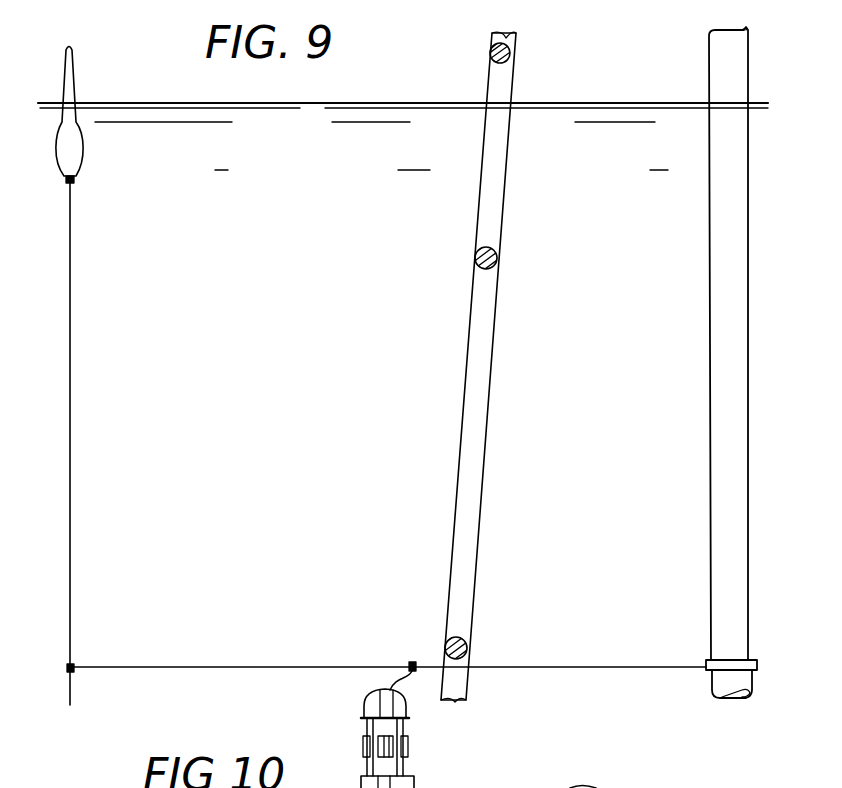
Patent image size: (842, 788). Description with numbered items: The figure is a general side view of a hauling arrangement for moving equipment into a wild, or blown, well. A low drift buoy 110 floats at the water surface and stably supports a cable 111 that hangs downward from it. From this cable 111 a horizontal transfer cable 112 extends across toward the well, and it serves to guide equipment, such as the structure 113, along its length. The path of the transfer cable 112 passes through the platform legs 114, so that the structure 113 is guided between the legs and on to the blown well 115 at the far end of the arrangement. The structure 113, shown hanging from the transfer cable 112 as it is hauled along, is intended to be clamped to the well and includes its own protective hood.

The low drift buoy 110 is at (75, 138).
The cable 111 is at (73, 348).
The horizontal transfer cable 112 is at (178, 666).
The structure 113 is at (348, 767).
The platform legs 114 is at (470, 463).
The blown well 115 is at (730, 525).